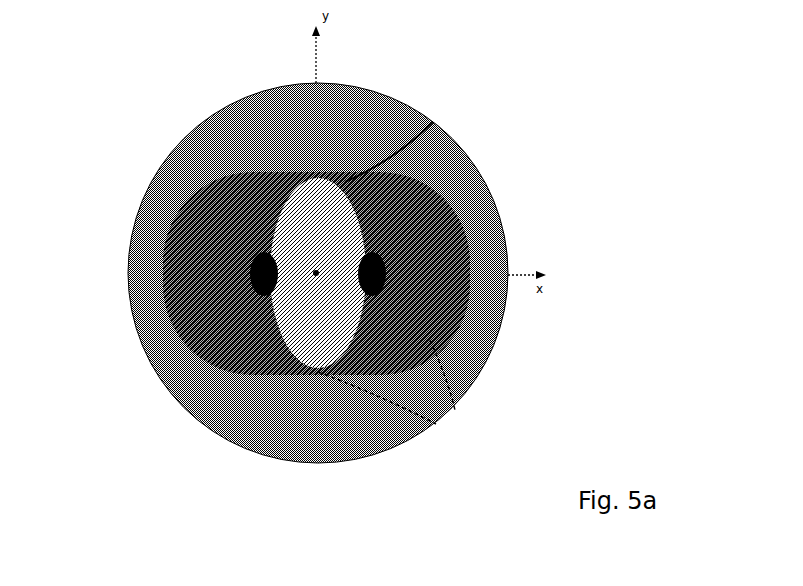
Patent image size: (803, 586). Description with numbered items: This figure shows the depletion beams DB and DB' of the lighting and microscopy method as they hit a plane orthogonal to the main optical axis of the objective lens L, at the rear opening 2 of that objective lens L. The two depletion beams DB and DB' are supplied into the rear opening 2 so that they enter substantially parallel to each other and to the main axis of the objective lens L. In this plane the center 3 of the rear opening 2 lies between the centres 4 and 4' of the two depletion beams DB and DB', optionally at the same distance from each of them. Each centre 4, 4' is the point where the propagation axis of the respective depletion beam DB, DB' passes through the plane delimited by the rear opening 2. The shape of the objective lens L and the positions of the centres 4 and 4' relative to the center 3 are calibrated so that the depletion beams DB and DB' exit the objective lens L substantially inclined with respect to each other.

The objective lens L is at (236, 142).
The rear opening 2 is at (434, 120).
The center 3 is at (316, 273).
The centre 4 is at (153, 226).
The centre 4' is at (493, 226).
The depletion beam DB is at (390, 426).
The depletion beam DB' is at (473, 399).